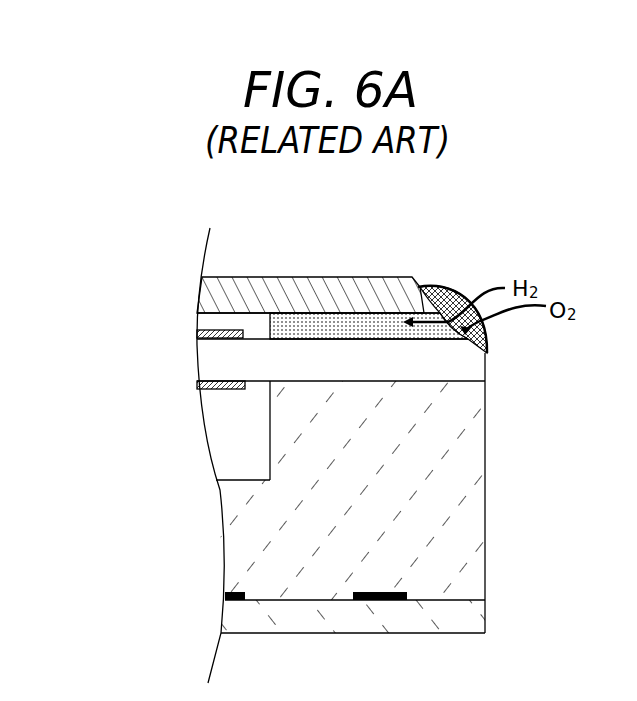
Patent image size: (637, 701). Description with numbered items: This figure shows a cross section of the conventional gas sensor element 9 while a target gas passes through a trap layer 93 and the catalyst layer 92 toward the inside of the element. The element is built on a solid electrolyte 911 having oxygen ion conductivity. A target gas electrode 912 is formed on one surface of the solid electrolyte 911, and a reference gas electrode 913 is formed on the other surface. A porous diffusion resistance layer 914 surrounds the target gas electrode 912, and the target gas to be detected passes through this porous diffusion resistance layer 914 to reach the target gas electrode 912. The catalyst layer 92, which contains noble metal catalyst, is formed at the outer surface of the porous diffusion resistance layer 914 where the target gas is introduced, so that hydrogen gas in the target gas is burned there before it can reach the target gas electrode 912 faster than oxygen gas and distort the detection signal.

The gas sensor element 9 is at (466, 245).
The solid electrolyte 911 is at (457, 369).
The target gas electrode 912 is at (211, 331).
The reference gas electrode 913 is at (218, 388).
The porous diffusion resistance layer 914 is at (328, 313).
The catalyst layer 92 is at (490, 338).
The porous protective layer 93 is at (430, 285).